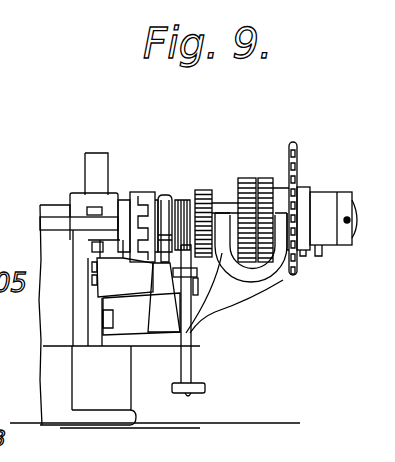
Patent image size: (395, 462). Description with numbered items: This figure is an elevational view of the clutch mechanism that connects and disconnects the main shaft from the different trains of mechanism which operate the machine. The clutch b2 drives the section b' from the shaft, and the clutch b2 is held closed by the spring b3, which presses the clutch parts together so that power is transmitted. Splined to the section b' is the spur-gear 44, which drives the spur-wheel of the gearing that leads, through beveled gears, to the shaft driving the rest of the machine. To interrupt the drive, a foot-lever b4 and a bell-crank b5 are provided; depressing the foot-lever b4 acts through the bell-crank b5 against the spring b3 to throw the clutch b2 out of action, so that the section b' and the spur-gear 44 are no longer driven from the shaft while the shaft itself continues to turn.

The clutch b2 is at (145, 192).
The spring b3 is at (185, 195).
The spur-gear 44 is at (205, 190).
The section b' is at (251, 201).
The bell-crank b5 is at (195, 277).
The foot-lever b4 is at (192, 358).